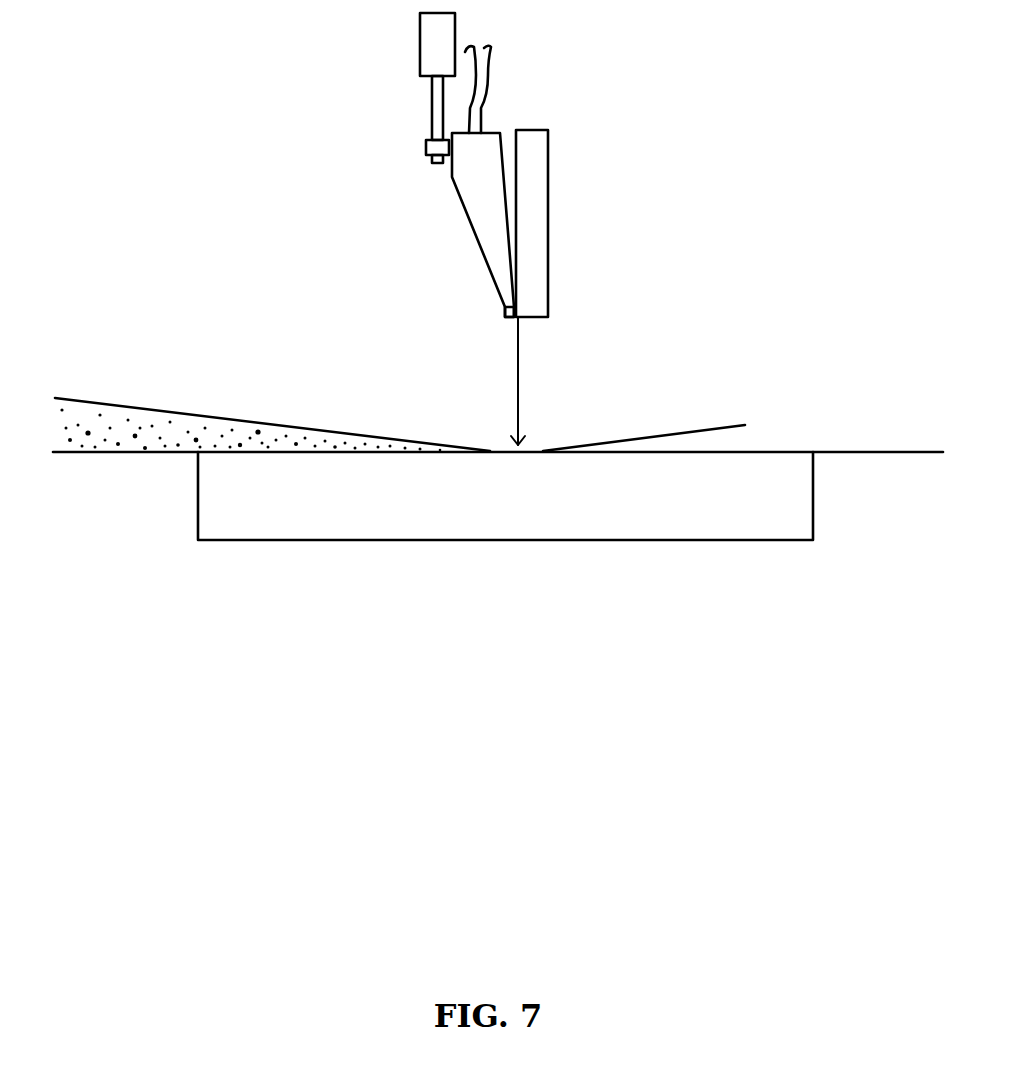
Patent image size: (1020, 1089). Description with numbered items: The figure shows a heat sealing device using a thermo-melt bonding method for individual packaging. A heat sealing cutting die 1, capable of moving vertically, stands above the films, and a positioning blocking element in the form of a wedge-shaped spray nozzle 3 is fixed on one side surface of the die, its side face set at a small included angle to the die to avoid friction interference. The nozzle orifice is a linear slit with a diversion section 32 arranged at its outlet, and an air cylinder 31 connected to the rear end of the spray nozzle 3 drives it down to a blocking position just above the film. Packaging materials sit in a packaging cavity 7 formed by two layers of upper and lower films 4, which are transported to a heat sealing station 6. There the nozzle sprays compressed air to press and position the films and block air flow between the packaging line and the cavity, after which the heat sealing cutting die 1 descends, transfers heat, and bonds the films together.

The heat sealing cutting die 1 is at (535, 193).
The wedge-shaped spray nozzle 3 is at (482, 197).
The air cylinder 31 is at (427, 63).
The diversion section 32 is at (505, 313).
The films 4 is at (152, 408).
The heat sealing station 6 is at (298, 512).
The packaging cavity 7 is at (240, 433).